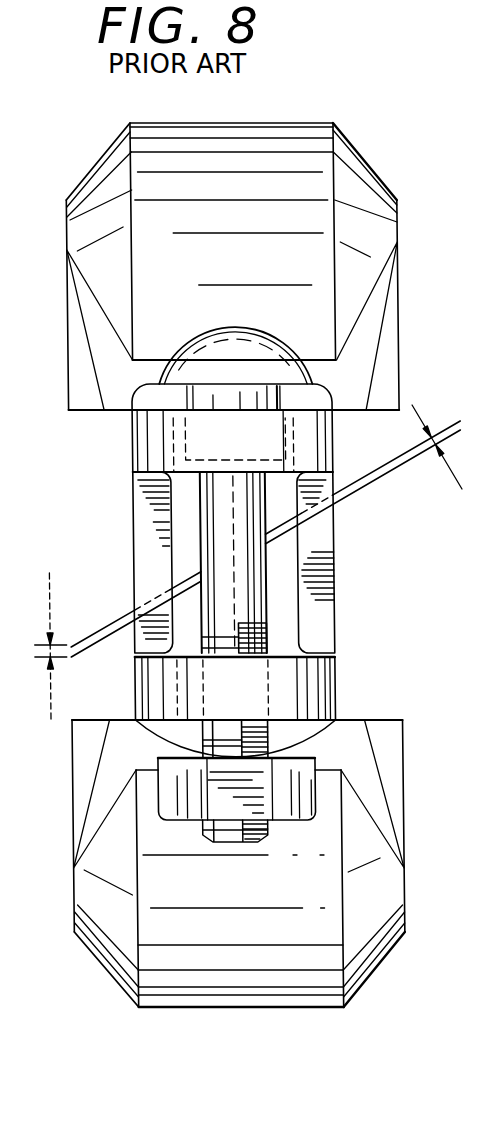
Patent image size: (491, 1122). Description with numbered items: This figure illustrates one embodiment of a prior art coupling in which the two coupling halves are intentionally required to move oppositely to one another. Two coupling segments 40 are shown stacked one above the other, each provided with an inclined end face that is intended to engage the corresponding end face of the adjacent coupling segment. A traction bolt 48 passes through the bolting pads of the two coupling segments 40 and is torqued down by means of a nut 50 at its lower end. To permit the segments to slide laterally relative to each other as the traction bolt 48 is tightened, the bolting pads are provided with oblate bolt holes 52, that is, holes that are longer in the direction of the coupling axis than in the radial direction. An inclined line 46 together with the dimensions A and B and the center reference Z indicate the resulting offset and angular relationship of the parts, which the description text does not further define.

The coupling segment 40 is at (264, 138).
The rod 46 is at (376, 482).
The traction bolt 48 is at (255, 607).
The nut 50 is at (303, 788).
The oblate bolt hole 52 is at (296, 700).
The rod diameter dimension A is at (442, 440).
The rod offset dimension B is at (52, 650).
The center axis Z is at (112, 533).